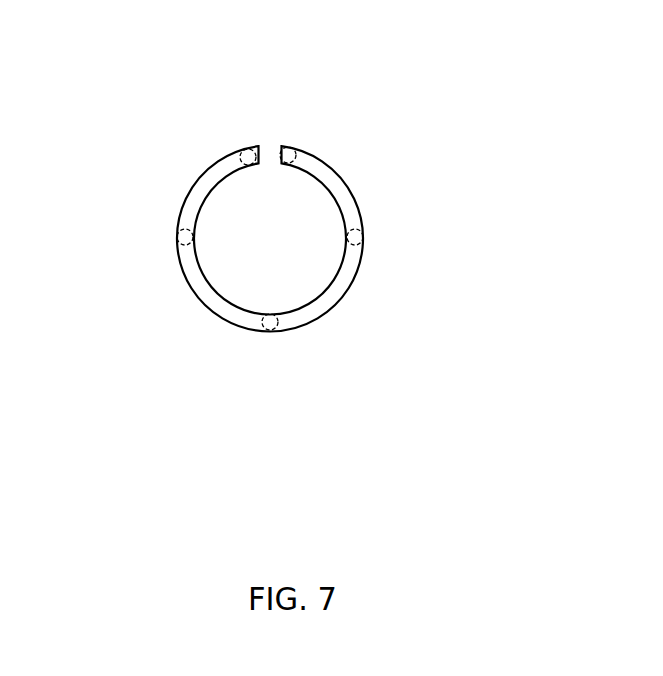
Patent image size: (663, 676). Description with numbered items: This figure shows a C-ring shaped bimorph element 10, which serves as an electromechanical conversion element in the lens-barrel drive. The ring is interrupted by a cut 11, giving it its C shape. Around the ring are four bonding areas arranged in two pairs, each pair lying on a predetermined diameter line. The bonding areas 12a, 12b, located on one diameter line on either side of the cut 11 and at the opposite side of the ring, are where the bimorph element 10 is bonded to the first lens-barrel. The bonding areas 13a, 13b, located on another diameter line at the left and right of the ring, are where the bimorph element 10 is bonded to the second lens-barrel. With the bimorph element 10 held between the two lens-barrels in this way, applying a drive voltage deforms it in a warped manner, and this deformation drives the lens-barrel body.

The C-ring shaped bimorph element 10 is at (330, 312).
The cut 11 is at (270, 148).
The bonding area 12a is at (262, 142).
The bonding area 12b is at (269, 335).
The bonding area 13a is at (178, 234).
The bonding area 13b is at (362, 242).